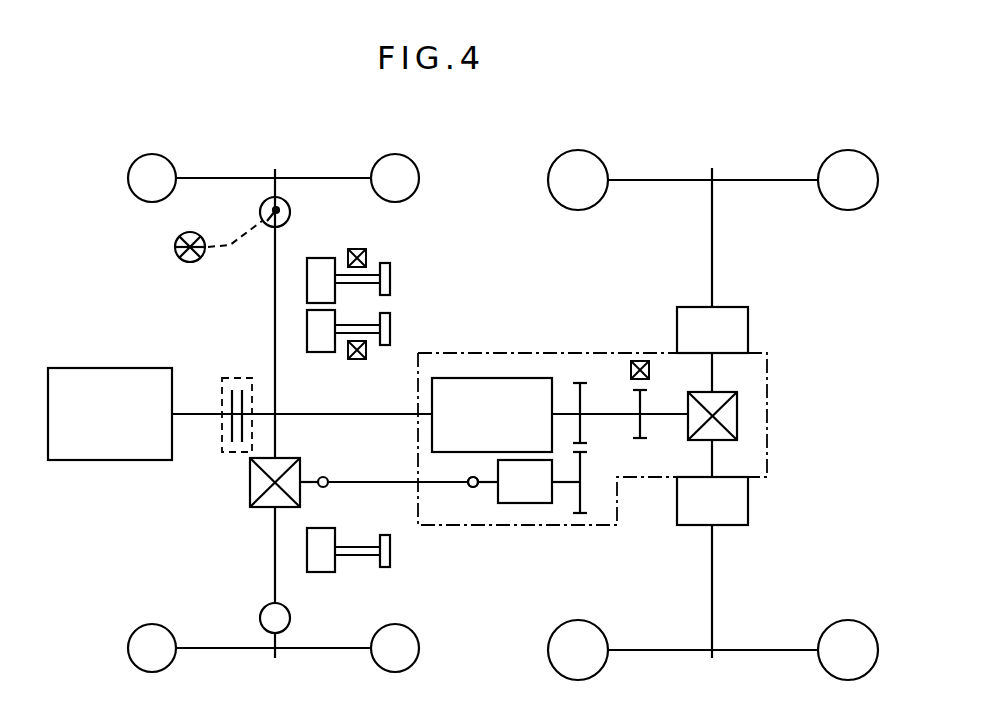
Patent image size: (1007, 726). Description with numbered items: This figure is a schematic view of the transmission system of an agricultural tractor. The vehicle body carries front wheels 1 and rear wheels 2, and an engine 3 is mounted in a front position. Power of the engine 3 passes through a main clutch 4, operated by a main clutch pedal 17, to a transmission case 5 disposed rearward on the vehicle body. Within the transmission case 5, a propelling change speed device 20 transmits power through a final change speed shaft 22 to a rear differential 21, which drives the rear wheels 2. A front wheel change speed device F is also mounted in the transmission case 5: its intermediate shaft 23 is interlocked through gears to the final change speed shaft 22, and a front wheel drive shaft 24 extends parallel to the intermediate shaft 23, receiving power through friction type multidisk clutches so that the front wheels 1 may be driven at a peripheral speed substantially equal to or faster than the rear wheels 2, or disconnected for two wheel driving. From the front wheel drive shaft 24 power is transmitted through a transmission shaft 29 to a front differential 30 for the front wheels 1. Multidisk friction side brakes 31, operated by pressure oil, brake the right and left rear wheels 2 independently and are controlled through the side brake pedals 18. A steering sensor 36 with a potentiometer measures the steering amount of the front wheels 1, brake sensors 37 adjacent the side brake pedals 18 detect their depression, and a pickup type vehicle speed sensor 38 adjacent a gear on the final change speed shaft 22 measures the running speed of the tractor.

The front wheels 1 is at (132, 172).
The rear wheels 2 is at (560, 183).
The engine 3 is at (98, 435).
The main clutch 4 is at (240, 377).
The transmission case 5 is at (525, 352).
The main clutch pedal 17 is at (320, 560).
The side brake pedals 18 is at (317, 328).
The propelling change speed device 20 is at (452, 378).
The rear differential 21 is at (738, 415).
The final change speed shaft 22 is at (605, 380).
The intermediate shaft 23 is at (563, 485).
The front wheel drive shaft 24 is at (485, 485).
The transmission shaft 29 is at (393, 478).
The front differential 30 is at (250, 483).
The side brakes 31 is at (732, 333).
The steering sensor 36 is at (173, 247).
The brake sensors 37 is at (357, 249).
The vehicle speed sensor 38 is at (642, 360).
The front wheel change speed device F is at (528, 492).